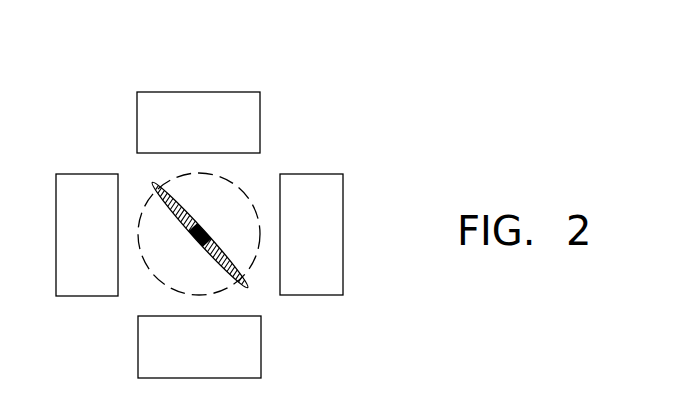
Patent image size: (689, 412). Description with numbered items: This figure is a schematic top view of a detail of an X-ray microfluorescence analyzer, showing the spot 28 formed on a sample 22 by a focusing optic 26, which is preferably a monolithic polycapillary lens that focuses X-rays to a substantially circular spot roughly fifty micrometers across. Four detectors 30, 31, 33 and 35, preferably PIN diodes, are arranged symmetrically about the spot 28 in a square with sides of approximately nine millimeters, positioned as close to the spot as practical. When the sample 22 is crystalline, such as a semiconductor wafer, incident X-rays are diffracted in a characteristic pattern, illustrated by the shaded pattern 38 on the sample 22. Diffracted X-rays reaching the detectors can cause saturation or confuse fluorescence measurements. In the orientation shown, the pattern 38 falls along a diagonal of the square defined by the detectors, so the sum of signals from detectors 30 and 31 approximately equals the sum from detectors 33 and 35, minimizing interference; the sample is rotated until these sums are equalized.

The sample 22 is at (107, 143).
The focusing optic 26 is at (238, 188).
The spot 28 is at (197, 223).
The detector 30 is at (343, 200).
The detector 31 is at (56, 240).
The detector 33 is at (156, 92).
The detector 35 is at (262, 367).
The shaded pattern 38 is at (248, 288).